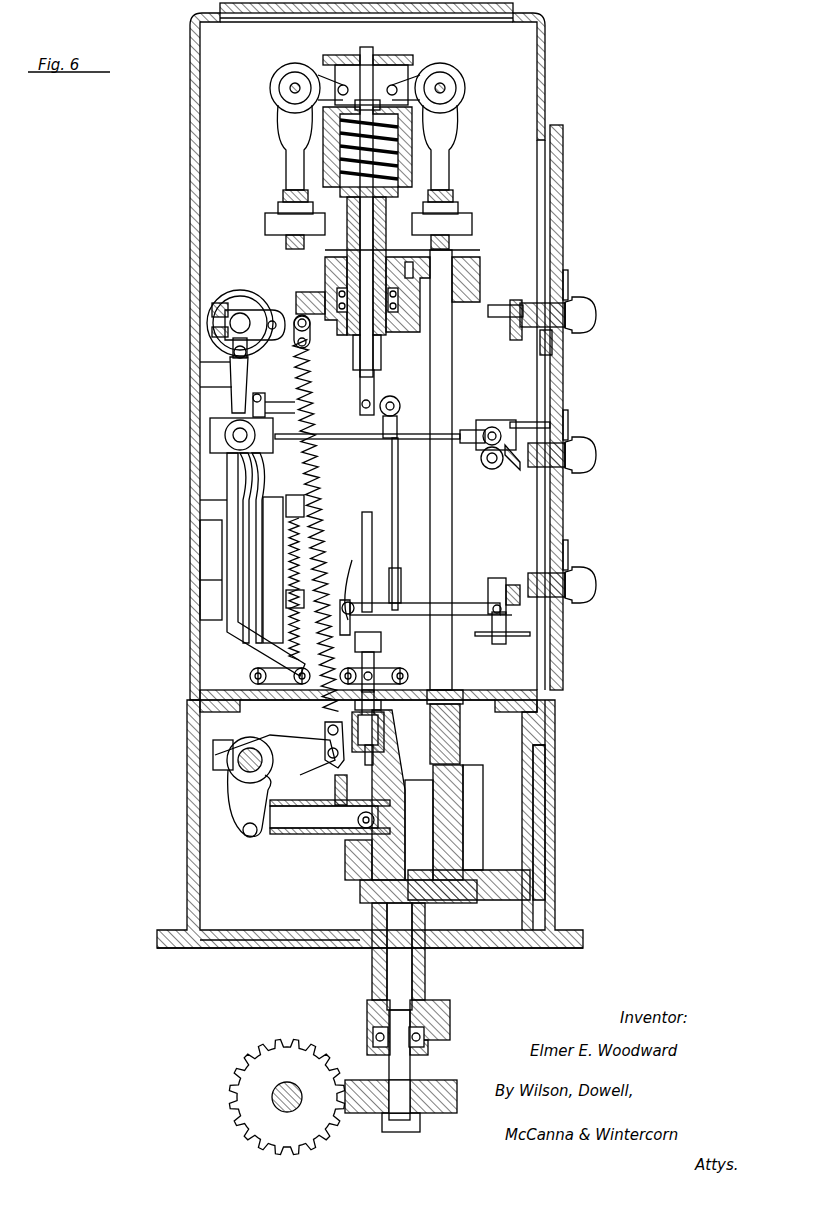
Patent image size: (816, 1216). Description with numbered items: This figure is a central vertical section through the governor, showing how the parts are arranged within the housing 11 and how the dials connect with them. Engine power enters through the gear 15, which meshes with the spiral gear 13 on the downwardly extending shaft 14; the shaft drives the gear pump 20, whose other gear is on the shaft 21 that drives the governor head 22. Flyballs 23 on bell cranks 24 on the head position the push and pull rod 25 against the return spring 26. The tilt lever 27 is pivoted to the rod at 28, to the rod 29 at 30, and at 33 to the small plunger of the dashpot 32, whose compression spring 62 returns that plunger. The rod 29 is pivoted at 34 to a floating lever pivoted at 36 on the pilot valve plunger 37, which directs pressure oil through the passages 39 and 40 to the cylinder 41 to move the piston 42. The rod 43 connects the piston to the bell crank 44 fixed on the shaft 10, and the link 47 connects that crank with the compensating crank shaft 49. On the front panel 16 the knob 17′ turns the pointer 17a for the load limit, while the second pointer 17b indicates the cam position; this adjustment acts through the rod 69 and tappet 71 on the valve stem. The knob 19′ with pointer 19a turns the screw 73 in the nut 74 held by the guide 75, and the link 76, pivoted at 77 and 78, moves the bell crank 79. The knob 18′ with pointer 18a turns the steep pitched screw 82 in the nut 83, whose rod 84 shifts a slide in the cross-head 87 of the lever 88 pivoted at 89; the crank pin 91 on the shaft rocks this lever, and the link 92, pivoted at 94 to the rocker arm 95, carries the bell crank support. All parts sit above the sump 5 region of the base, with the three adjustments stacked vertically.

The base casing 5 is at (213, 878).
The shaft 10 is at (262, 758).
The housing 11 is at (195, 628).
The spiral gear 13 is at (456, 1083).
The shaft 14 is at (413, 1065).
The gear 15 is at (258, 1072).
The front panel 16 is at (562, 510).
The pointer 17a is at (568, 283).
The knob 17′ is at (592, 310).
The second pointer 17b is at (568, 348).
The pointer 18a is at (568, 425).
The knob 18′ is at (594, 456).
The pointer 19a is at (568, 560).
The knob 19′ is at (594, 587).
The gear pump 20 is at (510, 855).
The shaft 21 is at (452, 552).
The governor head 22 is at (412, 170).
The flyballs 23 is at (466, 222).
The bell cranks 24 is at (445, 128).
The push and pull rod 25 is at (373, 246).
The return spring 26 is at (335, 138).
The tilt lever 27 is at (392, 400).
The pivotal connection 28 is at (366, 410).
The rod 29 is at (398, 462).
The pivotal connection 30 is at (400, 406).
The dashpot 32 is at (215, 556).
The pivotal connection 33 is at (258, 393).
The pivotal connection 34 is at (408, 676).
The pivot 36 is at (372, 672).
The pilot valve plunger 37 is at (375, 698).
The passage 39 is at (320, 780).
The passage 40 is at (463, 744).
The cylinder 41 is at (436, 808).
The piston 42 is at (453, 828).
The rod 43 is at (286, 830).
The bell crank 44 is at (295, 735).
The link 47 is at (322, 505).
The compensating crank shaft 49 is at (240, 313).
The coiled compression spring 62 is at (262, 472).
The rod 69 is at (362, 528).
The tappet 71 is at (380, 645).
The screw 73 is at (498, 582).
The nut 74 is at (497, 640).
The guide 75 is at (518, 636).
The link 76 is at (460, 603).
The pivotal connection 77 is at (490, 612).
The pivotal connection 78 is at (342, 576).
The bell crank 79 is at (340, 618).
The steep pitched screw 82 is at (512, 462).
The nut 83 is at (484, 469).
The rod 84 is at (448, 432).
The cross-head 87 is at (215, 430).
The lever 88 is at (250, 390).
The pivot 89 is at (238, 440).
The crank pin 91 is at (238, 356).
The link 92 is at (266, 520).
The pivot 94 is at (237, 666).
The rocker arm 95 is at (262, 683).